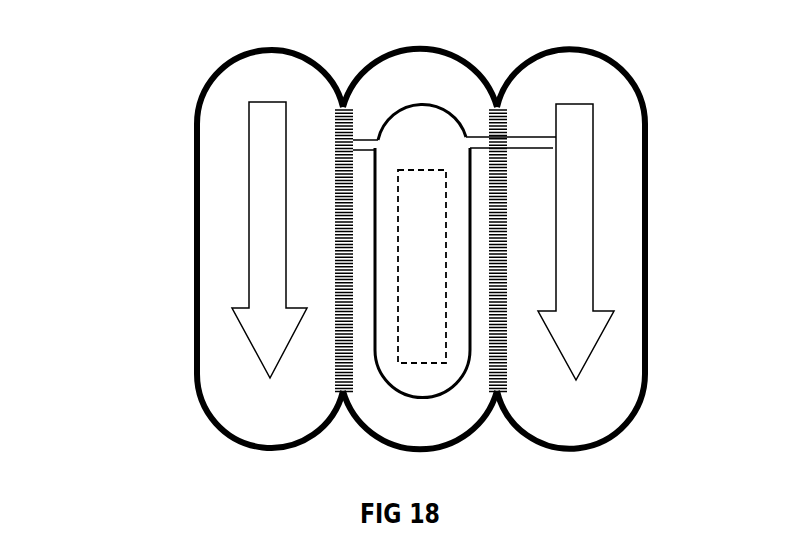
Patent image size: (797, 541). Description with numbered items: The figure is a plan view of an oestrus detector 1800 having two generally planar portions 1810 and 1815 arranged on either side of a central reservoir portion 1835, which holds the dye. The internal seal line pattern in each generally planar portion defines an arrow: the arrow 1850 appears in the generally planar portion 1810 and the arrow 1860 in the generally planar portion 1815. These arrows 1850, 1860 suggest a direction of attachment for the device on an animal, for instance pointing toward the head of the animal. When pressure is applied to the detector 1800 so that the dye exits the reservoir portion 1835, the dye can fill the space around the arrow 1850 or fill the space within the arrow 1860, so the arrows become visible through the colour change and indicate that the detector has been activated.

The oestrus detector 1800 is at (172, 344).
The generally planar portion 1810 is at (223, 223).
The generally planar portion 1815 is at (628, 113).
The reservoir portion 1835 is at (438, 137).
The arrow 1850 is at (245, 154).
The arrow 1860 is at (582, 200).